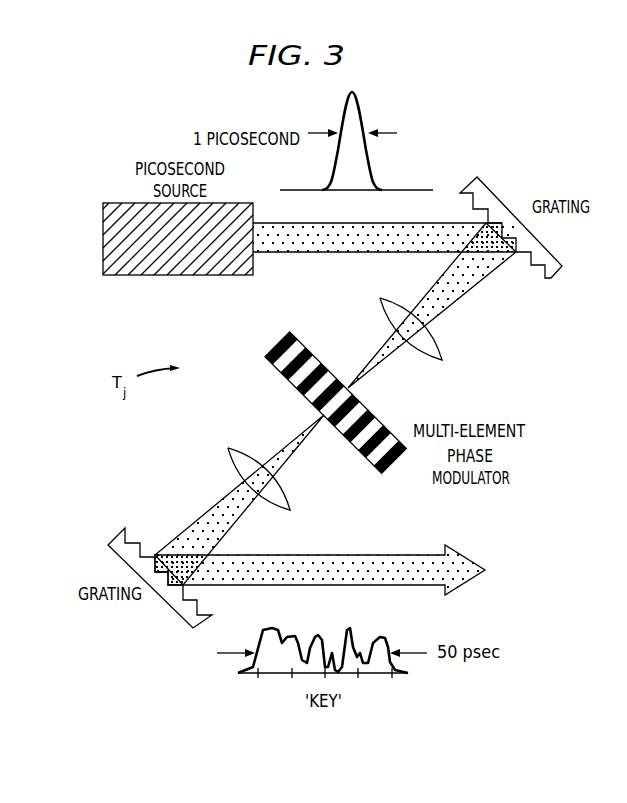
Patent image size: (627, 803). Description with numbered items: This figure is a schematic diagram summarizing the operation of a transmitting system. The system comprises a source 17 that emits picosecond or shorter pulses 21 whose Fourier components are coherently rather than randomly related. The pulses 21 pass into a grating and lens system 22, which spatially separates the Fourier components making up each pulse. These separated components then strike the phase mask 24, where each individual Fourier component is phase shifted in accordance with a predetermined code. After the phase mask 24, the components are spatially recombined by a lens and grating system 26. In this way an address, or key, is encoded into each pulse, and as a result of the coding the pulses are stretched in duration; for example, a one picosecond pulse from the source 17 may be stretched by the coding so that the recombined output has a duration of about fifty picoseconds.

The source 17 is at (103, 233).
The pulses 21 is at (375, 171).
The grating and lens system 22 is at (493, 302).
The phase mask 24 is at (348, 452).
The lens and grating system 26 is at (262, 540).